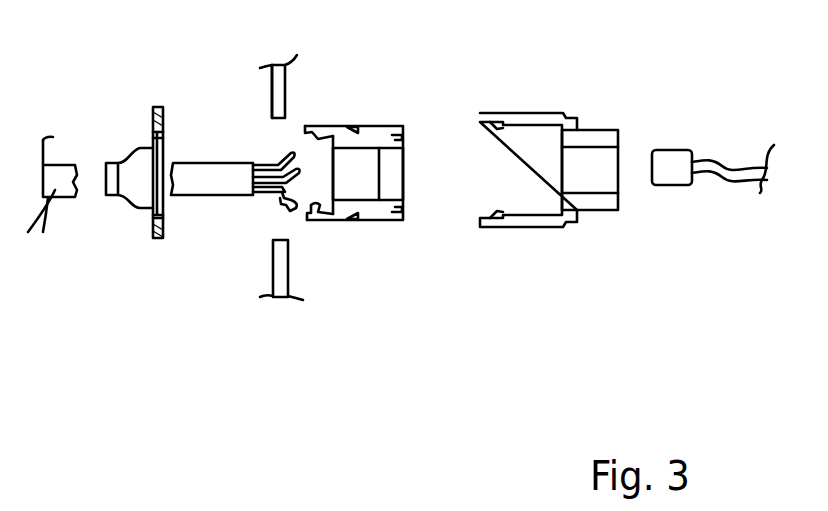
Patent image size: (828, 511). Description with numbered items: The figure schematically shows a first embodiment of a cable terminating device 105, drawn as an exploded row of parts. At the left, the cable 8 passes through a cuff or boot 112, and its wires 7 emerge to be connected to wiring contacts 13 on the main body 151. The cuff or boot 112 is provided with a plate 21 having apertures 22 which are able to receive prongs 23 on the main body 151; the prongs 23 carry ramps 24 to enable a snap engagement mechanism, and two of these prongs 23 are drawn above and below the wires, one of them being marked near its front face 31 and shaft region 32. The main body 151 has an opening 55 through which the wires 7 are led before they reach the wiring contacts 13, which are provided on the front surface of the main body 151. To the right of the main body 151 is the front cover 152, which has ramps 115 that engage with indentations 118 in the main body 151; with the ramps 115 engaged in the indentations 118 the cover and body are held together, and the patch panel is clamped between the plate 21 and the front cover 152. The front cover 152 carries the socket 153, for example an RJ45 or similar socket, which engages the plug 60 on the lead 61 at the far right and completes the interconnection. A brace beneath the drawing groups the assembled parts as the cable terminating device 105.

The wires 7 is at (280, 202).
The cable 8 is at (207, 183).
The wiring contacts 13 is at (383, 169).
The plate 21 is at (160, 118).
The apertures 22 is at (147, 222).
The prongs 23 is at (307, 128).
The ramps 24 is at (308, 218).
The front face 31 is at (288, 77).
The pin shaft 32 is at (270, 107).
The opening 55 is at (368, 174).
The plug 60 is at (673, 162).
The lead 61 is at (728, 168).
The cable terminating device 105 is at (147, 350).
The cuff or boot 112 is at (130, 173).
The ramps 115 is at (502, 207).
The indentations 118 is at (352, 223).
The main body 151 is at (417, 225).
The front cover 152 is at (549, 147).
The socket 153 is at (590, 170).